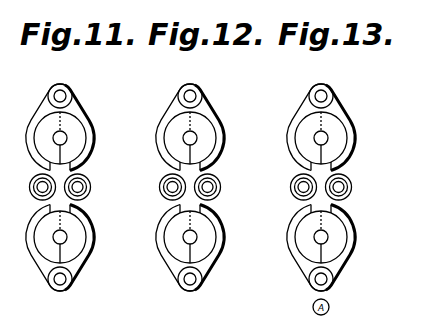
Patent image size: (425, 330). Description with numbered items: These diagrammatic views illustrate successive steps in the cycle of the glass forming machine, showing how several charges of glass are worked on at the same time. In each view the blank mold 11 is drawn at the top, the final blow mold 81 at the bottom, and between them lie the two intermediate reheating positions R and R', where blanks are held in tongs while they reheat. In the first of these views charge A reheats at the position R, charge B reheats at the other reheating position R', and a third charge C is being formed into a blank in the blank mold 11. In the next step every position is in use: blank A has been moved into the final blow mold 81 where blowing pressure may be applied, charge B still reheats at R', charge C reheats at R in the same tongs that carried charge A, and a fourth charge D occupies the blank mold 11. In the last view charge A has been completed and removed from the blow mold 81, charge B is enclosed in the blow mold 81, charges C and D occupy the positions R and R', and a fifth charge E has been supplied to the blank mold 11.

In FIG. 11, the blank mold 11 is at (78, 137).
In FIG. 12, the blank mold 11 is at (208, 140).
In FIG. 13, the blank mold 11 is at (337, 146).
In FIG. 11, the final blow mold 81 is at (68, 252).
In FIG. 12, the final blow mold 81 is at (200, 250).
In FIG. 13, the final blow mold 81 is at (341, 242).
In FIG. 11, the reheating position R is at (31, 196).
In FIG. 12, the reheating position R is at (159, 190).
In FIG. 13, the reheating position R is at (292, 183).
In FIG. 11, the reheating position R' is at (91, 187).
In FIG. 12, the reheating position R' is at (220, 190).
In FIG. 13, the reheating position R' is at (352, 190).